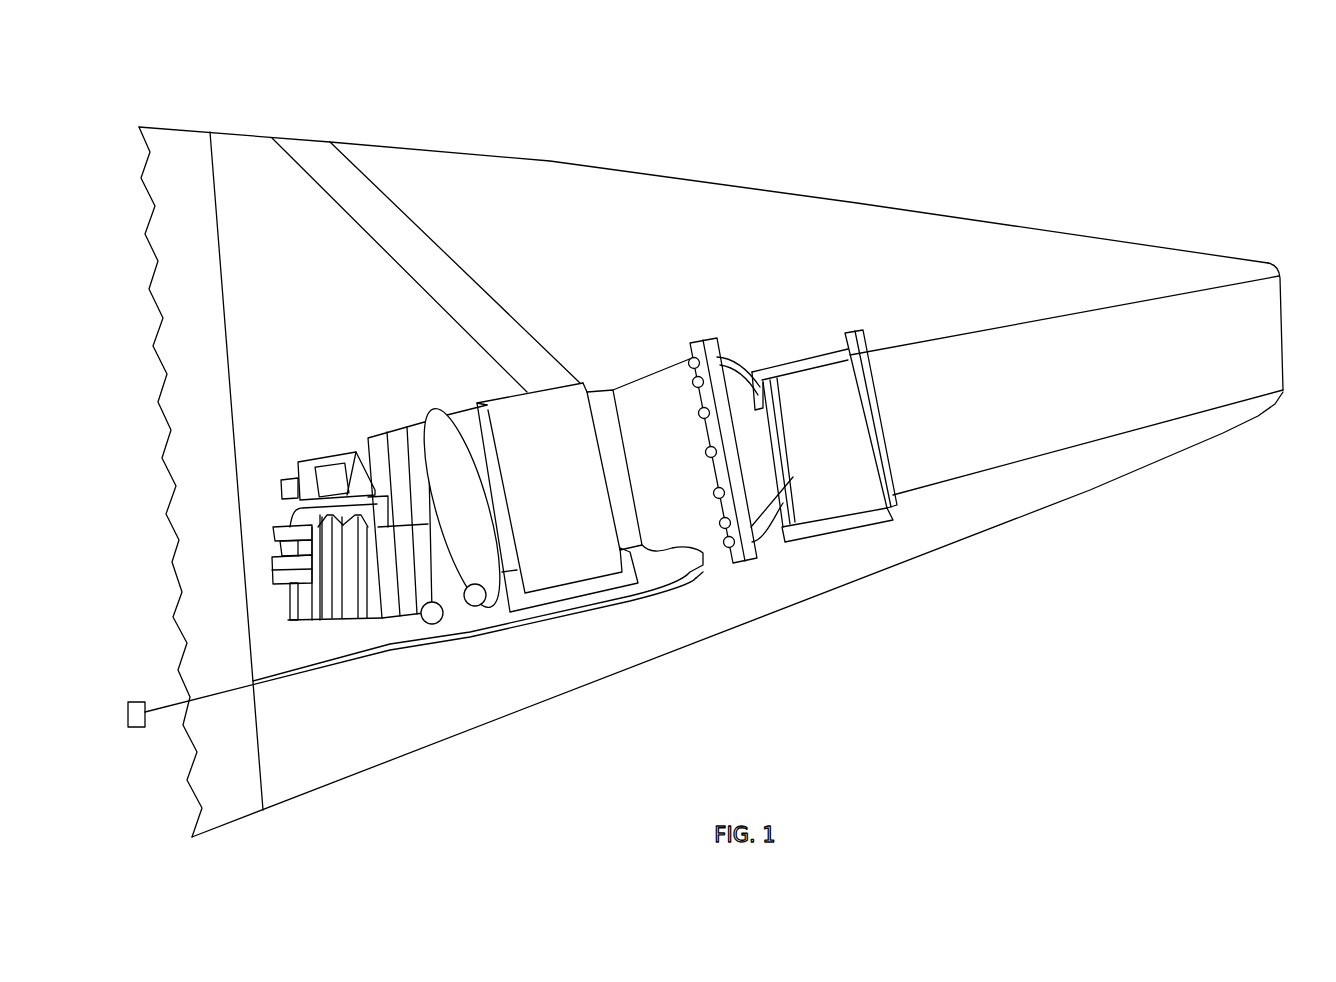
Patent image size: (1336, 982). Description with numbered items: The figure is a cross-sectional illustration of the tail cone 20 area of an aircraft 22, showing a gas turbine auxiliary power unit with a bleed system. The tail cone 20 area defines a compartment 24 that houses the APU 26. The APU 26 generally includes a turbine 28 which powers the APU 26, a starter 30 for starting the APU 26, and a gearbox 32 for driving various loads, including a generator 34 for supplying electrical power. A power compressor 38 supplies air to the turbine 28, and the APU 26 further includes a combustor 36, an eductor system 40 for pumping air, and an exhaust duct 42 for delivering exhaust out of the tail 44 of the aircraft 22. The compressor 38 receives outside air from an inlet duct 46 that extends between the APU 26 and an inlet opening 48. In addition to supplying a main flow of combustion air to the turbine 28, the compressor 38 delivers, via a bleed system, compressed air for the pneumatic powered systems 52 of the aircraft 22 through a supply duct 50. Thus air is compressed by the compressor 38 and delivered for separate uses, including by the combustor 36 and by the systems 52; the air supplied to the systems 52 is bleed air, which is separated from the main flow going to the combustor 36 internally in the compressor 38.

The tail cone 20 is at (1057, 230).
The aircraft 22 is at (180, 130).
The compartment 24 is at (892, 240).
The APU 26 is at (637, 413).
The turbine 28 is at (755, 394).
The starter 30 is at (326, 466).
The gearbox 32 is at (352, 612).
The generator 34 is at (325, 615).
The combustor 36 is at (667, 363).
The power compressor 38 is at (617, 530).
The eductor system 40 is at (824, 398).
The exhaust duct 42 is at (1097, 442).
The tail 44 is at (1268, 261).
The inlet duct 46 is at (470, 265).
The inlet opening 48 is at (307, 147).
The supply duct 50 is at (432, 650).
The pneumatic powered systems 52 is at (135, 728).